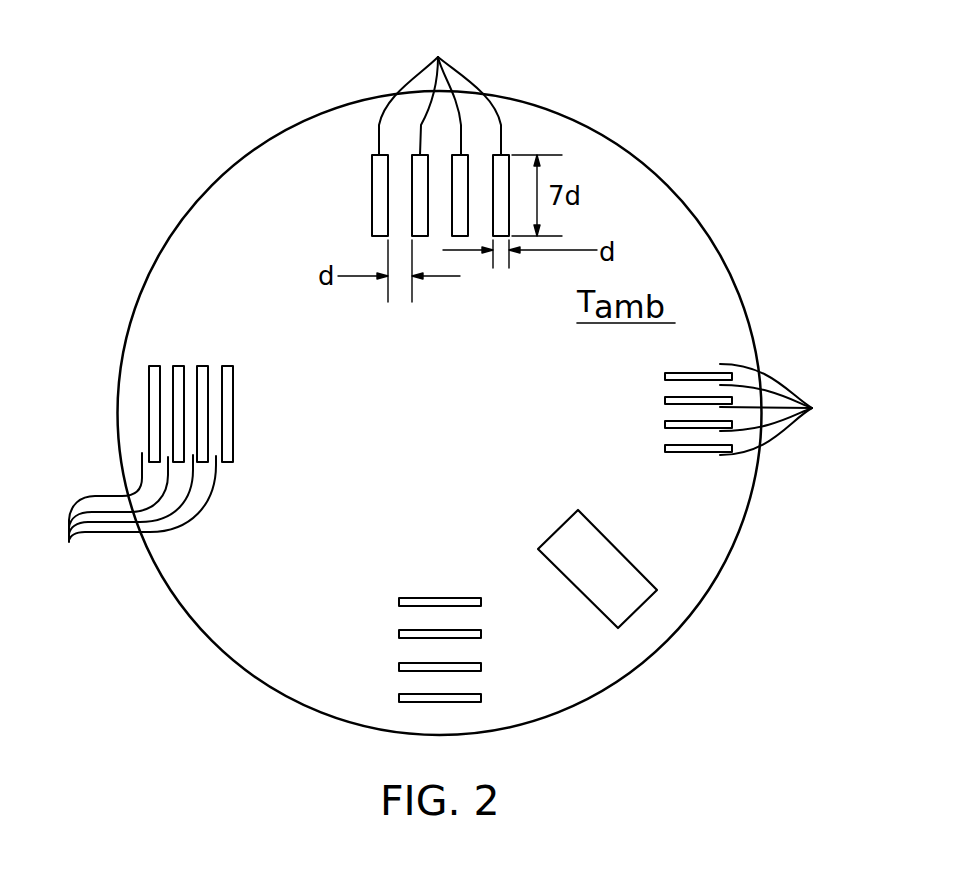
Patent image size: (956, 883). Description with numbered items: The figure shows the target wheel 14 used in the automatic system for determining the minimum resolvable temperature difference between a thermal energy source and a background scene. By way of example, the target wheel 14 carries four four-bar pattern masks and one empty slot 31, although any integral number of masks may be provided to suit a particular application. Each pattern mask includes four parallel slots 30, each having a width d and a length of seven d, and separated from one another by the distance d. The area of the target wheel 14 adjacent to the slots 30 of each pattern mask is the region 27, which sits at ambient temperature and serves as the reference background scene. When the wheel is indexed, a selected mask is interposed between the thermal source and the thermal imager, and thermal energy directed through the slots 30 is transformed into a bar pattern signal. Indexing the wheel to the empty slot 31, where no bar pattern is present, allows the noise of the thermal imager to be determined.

The target wheel 14 is at (689, 205).
The region 27 is at (812, 408).
The slots 30 is at (438, 57).
The empty slot 31 is at (643, 570).